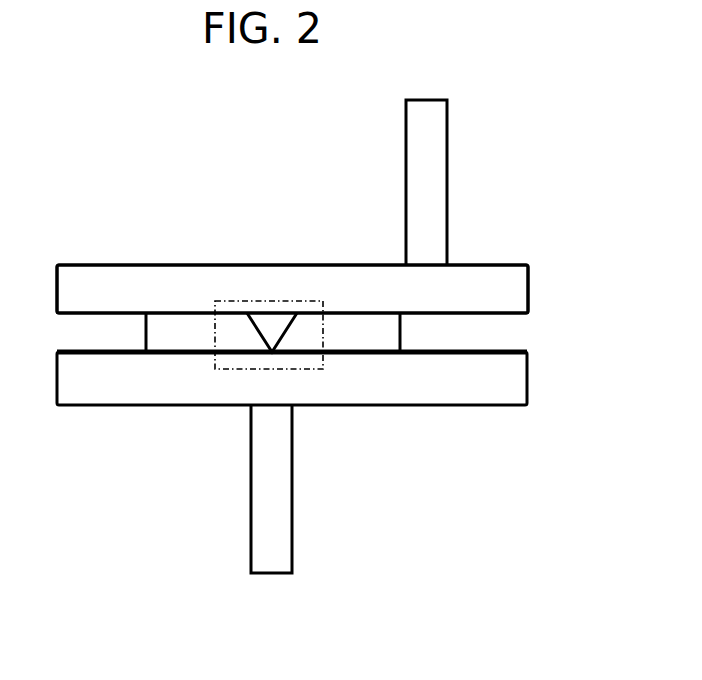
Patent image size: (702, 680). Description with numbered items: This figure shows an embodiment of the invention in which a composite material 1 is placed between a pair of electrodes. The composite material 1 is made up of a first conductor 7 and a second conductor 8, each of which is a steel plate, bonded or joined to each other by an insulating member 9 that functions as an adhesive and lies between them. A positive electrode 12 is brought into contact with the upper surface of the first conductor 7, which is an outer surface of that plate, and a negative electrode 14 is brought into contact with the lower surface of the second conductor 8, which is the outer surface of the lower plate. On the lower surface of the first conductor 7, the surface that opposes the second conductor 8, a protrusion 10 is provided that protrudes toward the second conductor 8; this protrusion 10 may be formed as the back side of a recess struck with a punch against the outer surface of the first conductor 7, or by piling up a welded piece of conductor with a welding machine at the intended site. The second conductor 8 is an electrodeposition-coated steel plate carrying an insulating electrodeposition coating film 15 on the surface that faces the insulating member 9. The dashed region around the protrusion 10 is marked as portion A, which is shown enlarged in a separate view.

The composite material 1 is at (487, 266).
The first conductor 7 is at (130, 265).
The second conductor 8 is at (130, 405).
The insulating member 9 is at (201, 330).
The protrusion 10 is at (283, 340).
The positive electrode 12 is at (448, 158).
The negative electrode 14 is at (248, 515).
The insulating electrodeposition coating film 15 is at (308, 349).
The portion A is at (272, 298).